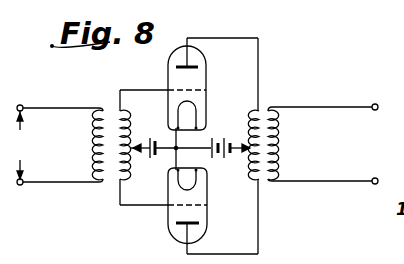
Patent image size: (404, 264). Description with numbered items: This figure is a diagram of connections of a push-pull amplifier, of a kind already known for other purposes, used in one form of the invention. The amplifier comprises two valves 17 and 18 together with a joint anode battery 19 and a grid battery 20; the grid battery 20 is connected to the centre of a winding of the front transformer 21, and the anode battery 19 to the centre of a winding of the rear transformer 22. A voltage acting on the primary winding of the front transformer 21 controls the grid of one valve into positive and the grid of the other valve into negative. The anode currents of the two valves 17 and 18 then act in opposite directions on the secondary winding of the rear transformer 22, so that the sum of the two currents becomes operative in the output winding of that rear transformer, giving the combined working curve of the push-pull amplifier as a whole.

The valve 17 is at (176, 69).
The valve 18 is at (200, 223).
The anode battery 19 is at (222, 136).
The grid battery 20 is at (152, 140).
The front transformer 21 is at (108, 112).
The rear transformer 22 is at (266, 110).